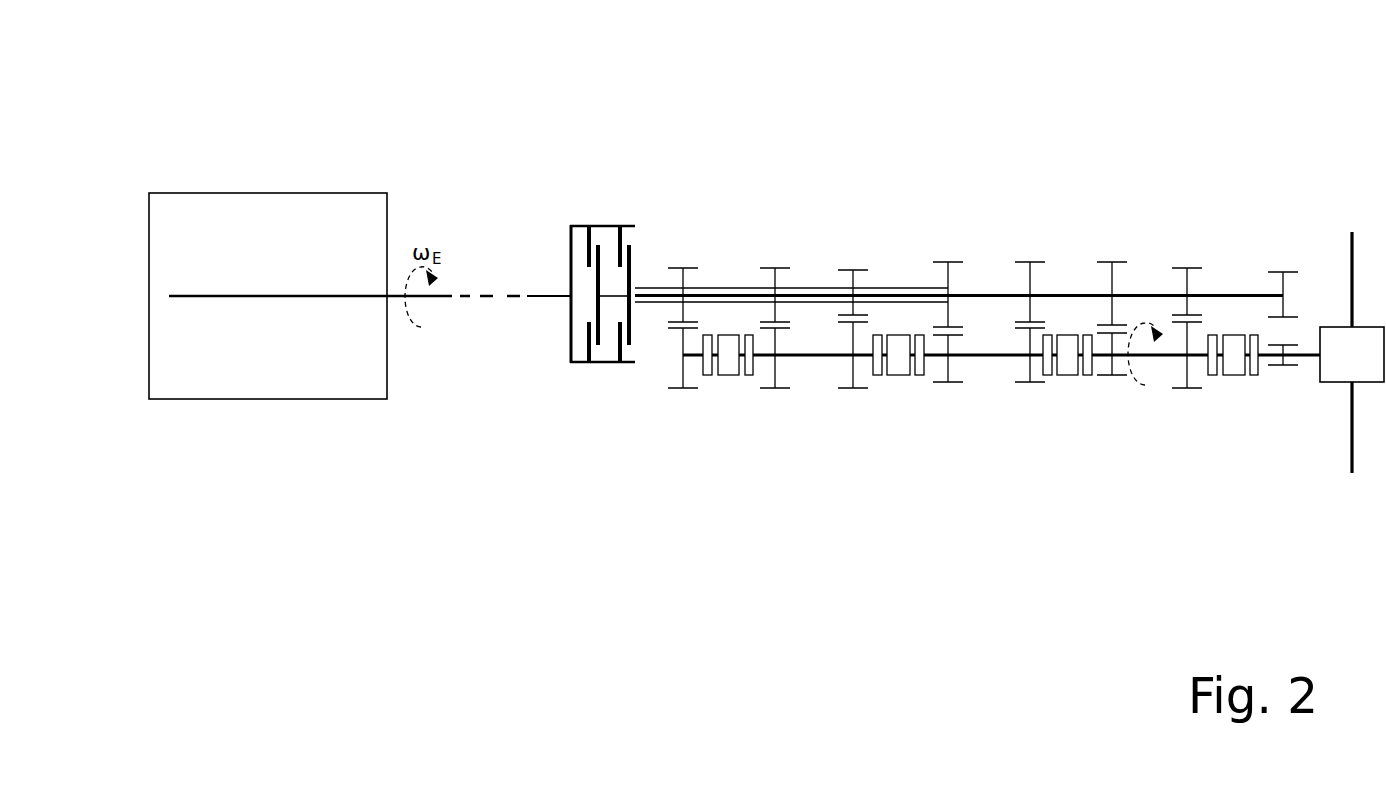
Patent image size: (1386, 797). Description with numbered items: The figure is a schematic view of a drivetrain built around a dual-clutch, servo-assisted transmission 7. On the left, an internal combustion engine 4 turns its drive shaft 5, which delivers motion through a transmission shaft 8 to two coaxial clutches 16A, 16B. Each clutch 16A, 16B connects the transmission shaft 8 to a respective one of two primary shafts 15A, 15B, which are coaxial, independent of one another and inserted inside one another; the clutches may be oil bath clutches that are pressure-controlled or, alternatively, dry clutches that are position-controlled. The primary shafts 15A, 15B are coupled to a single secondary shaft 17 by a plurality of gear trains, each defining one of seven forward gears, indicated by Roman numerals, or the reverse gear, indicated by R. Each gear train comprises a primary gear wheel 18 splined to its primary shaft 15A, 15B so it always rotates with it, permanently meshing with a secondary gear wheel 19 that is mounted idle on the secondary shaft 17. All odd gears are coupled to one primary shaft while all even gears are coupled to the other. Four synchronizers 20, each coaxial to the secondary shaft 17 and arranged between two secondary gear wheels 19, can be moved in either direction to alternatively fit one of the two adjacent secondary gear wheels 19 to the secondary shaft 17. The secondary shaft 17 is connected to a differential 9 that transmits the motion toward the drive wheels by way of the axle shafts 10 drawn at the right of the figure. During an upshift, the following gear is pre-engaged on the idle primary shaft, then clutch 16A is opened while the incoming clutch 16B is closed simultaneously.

The internal combustion engine 4 is at (232, 228).
The drive shaft 5 is at (315, 297).
The dual-clutch, servo-assisted transmission 7 is at (931, 114).
The transmission shaft 8 is at (527, 295).
The differential 9 is at (1352, 354).
The drive axle 10 is at (1350, 238).
The primary shaft 15A is at (803, 285).
The primary shaft 15B is at (1147, 295).
The clutch 16A is at (618, 354).
The incoming clutch 16B is at (605, 400).
The secondary shaft 17 is at (827, 357).
The primary gear wheel 18 is at (1030, 279).
The secondary gear wheel 19 is at (1030, 370).
The synchronizer 20 is at (730, 371).